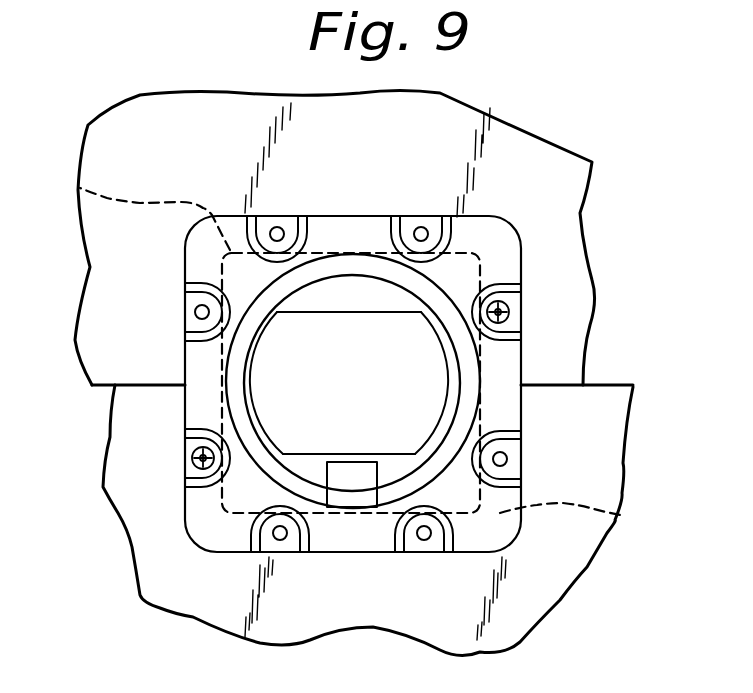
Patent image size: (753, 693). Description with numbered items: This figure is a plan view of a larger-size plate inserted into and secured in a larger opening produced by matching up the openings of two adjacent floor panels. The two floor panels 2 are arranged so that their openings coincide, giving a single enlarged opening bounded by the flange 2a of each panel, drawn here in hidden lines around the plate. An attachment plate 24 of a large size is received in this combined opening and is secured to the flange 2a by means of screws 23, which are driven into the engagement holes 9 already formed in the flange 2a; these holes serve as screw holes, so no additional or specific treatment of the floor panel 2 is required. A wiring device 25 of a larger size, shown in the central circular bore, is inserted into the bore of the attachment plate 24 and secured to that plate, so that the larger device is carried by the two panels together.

The floor panel 2 is at (493, 148).
The flange 2a is at (80, 188).
The engagement hole 9 is at (512, 303).
The screws 23 is at (508, 315).
The attachment plate 24 is at (465, 276).
The wiring device 25 is at (432, 384).